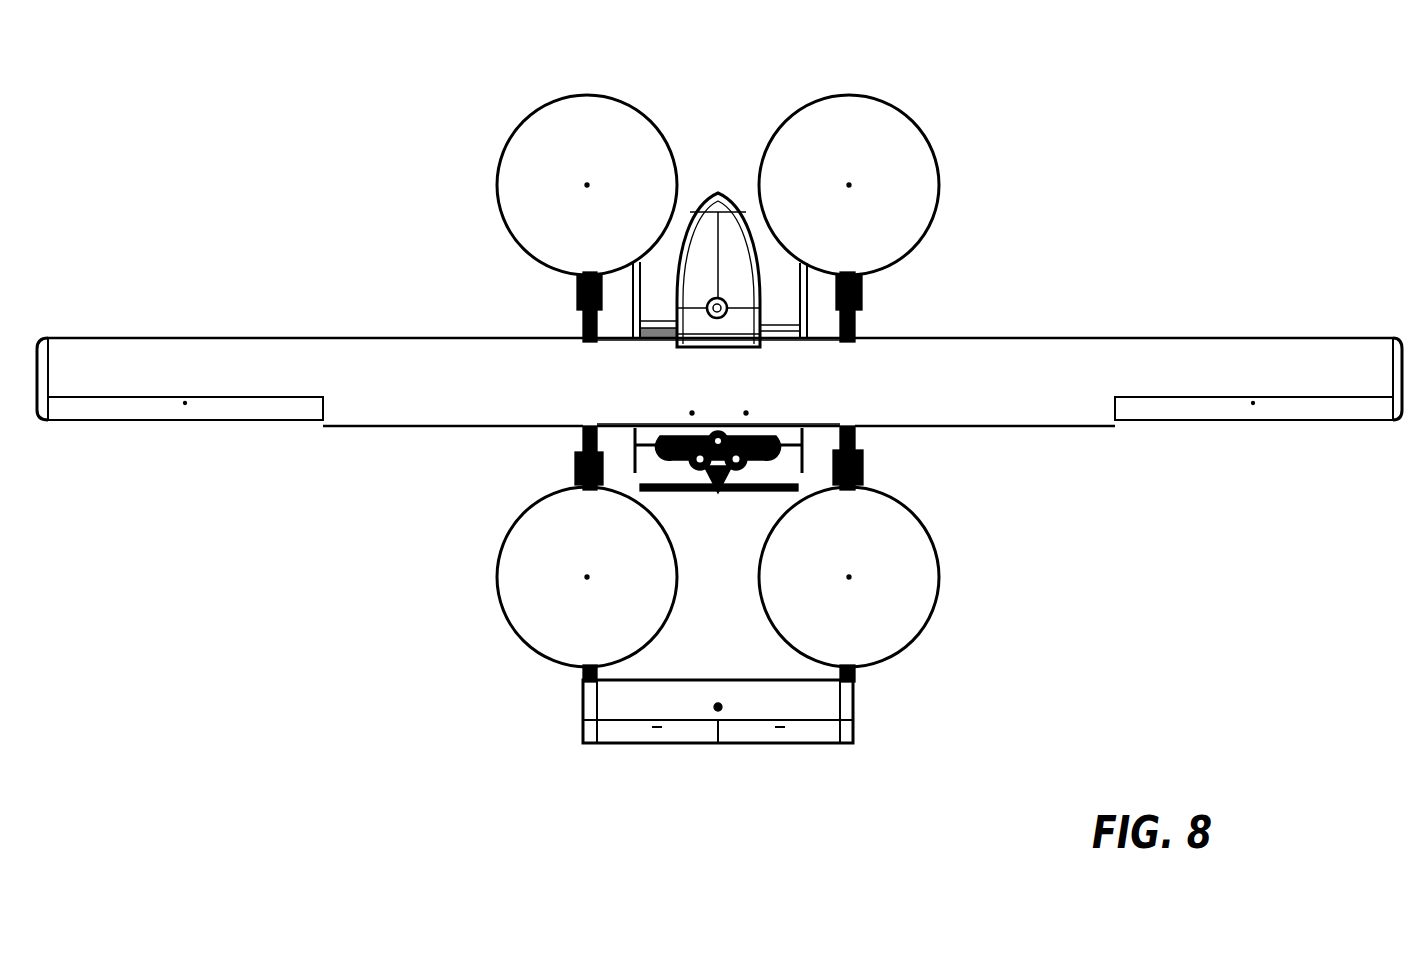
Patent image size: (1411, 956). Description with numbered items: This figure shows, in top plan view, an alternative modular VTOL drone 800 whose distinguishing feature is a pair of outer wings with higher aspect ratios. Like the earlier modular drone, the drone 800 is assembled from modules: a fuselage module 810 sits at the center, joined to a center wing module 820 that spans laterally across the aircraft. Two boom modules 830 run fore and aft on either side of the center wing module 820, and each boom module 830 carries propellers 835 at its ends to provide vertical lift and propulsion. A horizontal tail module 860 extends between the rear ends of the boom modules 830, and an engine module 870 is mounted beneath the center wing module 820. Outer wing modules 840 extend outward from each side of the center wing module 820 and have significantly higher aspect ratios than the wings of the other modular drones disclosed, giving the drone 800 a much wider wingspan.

The drone 800 is at (294, 112).
The fuselage module 810 is at (735, 308).
The center wing module 820 is at (803, 413).
The boom modules 830 is at (575, 305).
The propellers 835 is at (497, 583).
The outer wing modules 840 is at (133, 376).
The horizontal tail module 860 is at (580, 715).
The engine module 870 is at (640, 455).